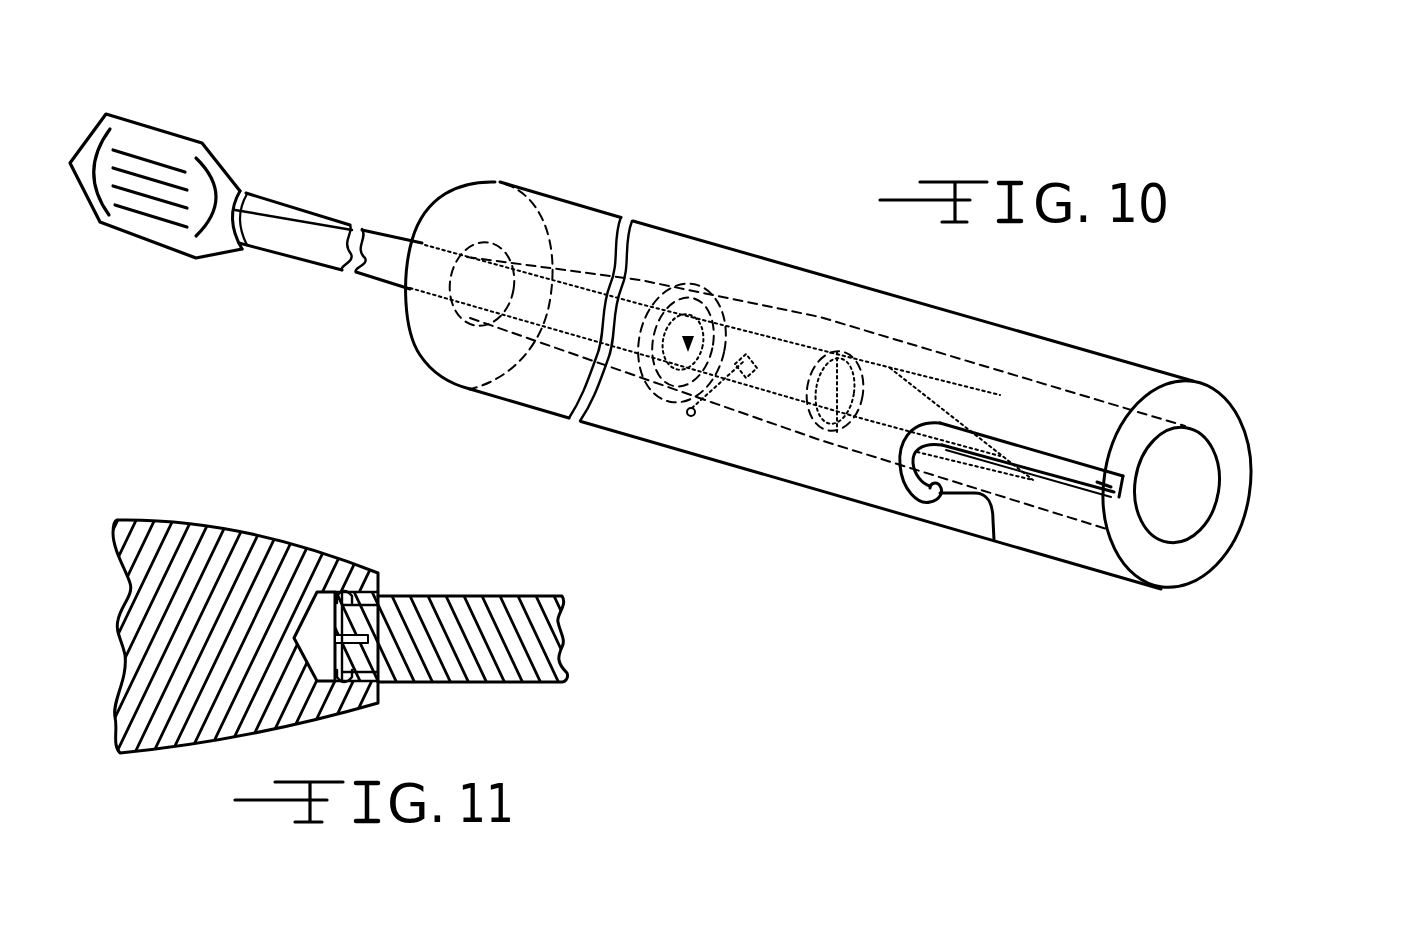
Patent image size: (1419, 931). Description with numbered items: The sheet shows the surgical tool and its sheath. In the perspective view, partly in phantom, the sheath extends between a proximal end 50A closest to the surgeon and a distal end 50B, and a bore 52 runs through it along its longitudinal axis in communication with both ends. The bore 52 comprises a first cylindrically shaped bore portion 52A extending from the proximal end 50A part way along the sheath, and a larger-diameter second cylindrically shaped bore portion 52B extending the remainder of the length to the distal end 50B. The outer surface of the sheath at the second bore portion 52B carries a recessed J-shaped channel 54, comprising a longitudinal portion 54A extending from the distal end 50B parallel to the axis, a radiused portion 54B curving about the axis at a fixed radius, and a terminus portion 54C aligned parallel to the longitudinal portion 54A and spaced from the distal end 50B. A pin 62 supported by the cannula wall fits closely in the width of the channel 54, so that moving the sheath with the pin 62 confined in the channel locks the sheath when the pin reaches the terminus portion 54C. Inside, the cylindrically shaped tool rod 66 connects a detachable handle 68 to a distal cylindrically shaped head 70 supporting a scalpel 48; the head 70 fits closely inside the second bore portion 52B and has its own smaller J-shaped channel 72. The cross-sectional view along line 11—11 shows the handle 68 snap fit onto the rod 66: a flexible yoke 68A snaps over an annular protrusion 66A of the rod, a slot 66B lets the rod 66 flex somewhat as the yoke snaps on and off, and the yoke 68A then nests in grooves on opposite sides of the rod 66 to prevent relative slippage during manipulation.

In FIG. 10, the section line 11— 11 is at (209, 194).
In FIG. 10, the scalpel 48 is at (922, 420).
In FIG. 10, the proximal end 50A is at (486, 200).
In FIG. 10, the distal end 50B is at (1230, 432).
In FIG. 10, the bore 52 is at (1182, 486).
In FIG. 10, the first cylindrically shaped bore portion 52A is at (573, 267).
In FIG. 10, the second cylindrically shaped bore portion 52B is at (805, 368).
In FIG. 10, the J-shaped channel 54 is at (1030, 432).
In FIG. 10, the longitudinal portion 54A is at (1112, 497).
In FIG. 10, the radiused portion 54B is at (905, 462).
In FIG. 10, the terminus portion 54C is at (994, 540).
In FIG. 10, the pin 62 is at (692, 416).
In FIG. 10, the tool rod 66 is at (387, 228).
In FIG. 11, the tool rod 66 is at (475, 594).
In FIG. 11, the annular protrusion 66A is at (337, 588).
In FIG. 11, the slot 66B is at (372, 662).
In FIG. 10, the handle 68 is at (213, 150).
In FIG. 11, the handle 68 is at (163, 520).
In FIG. 11, the flexible yoke 68A is at (339, 574).
In FIG. 10, the head 70 is at (838, 353).
In FIG. 10, the J-shaped channel 72 is at (722, 300).